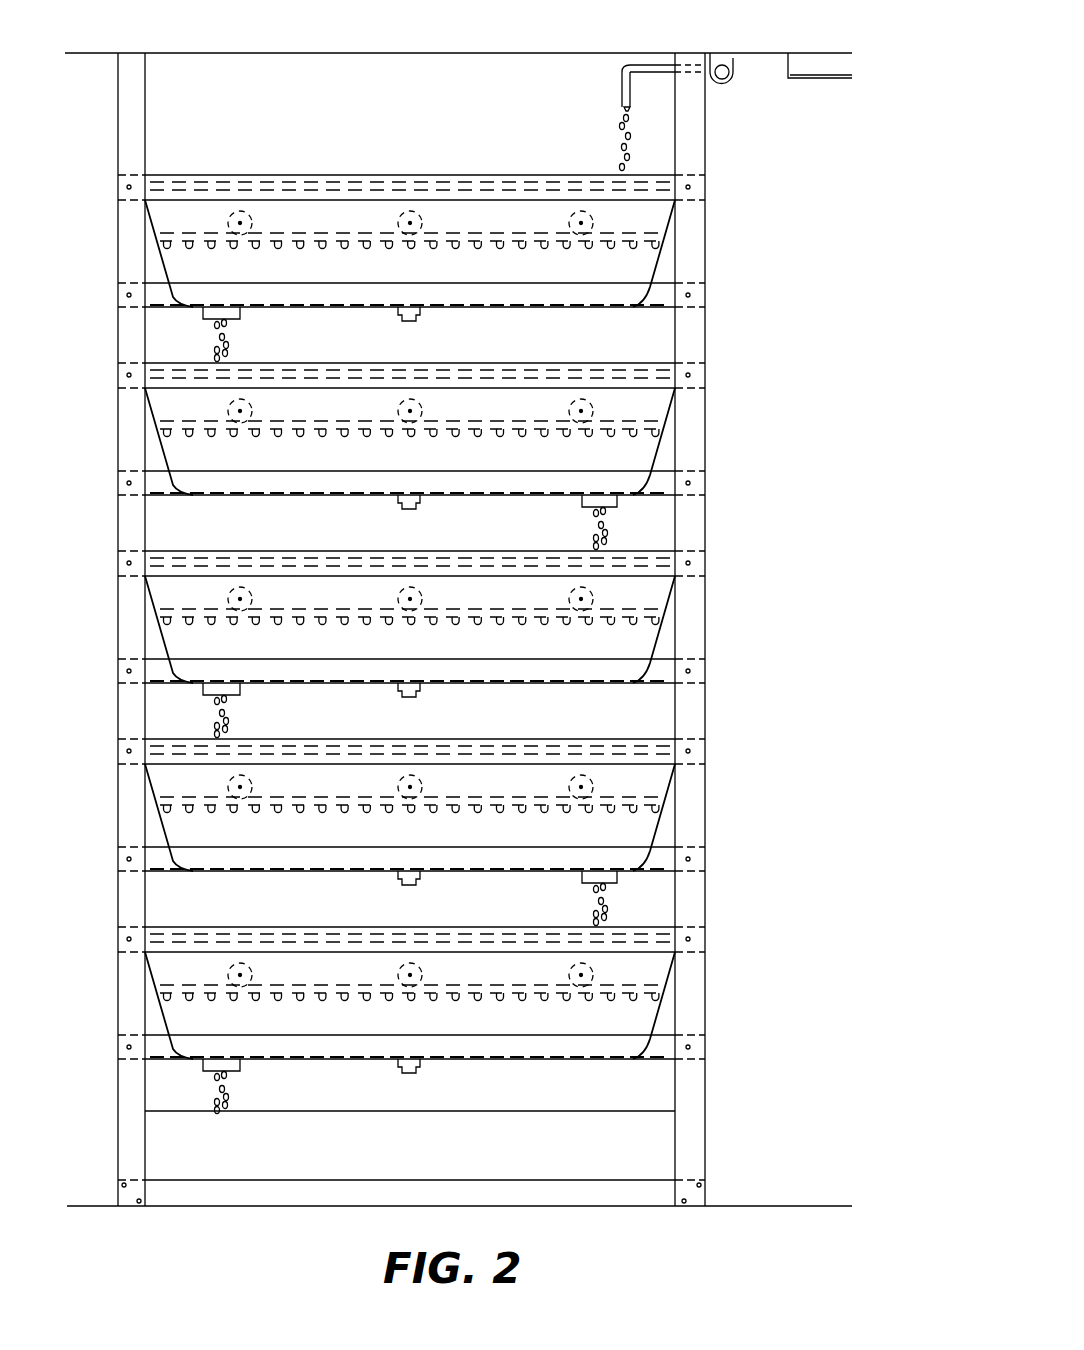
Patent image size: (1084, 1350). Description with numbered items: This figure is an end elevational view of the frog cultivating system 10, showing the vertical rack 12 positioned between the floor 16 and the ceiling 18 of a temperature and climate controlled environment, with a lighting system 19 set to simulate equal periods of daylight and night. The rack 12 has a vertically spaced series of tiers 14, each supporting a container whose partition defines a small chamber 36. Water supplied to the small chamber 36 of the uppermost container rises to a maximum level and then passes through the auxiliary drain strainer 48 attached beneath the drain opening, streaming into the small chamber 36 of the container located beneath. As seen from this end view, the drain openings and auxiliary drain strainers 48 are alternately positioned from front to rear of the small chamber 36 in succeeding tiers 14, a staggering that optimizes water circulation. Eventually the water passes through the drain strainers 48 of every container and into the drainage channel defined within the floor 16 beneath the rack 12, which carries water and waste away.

The frog cultivating system 10 is at (459, 606).
The vertical rack 12 is at (450, 629).
The tiers 14 is at (696, 240).
The floor 16 is at (752, 1205).
The ceiling 18 is at (748, 52).
The lighting system 19 is at (804, 68).
The small chamber 36 is at (175, 262).
The auxiliary drain strainer 48 is at (228, 315).